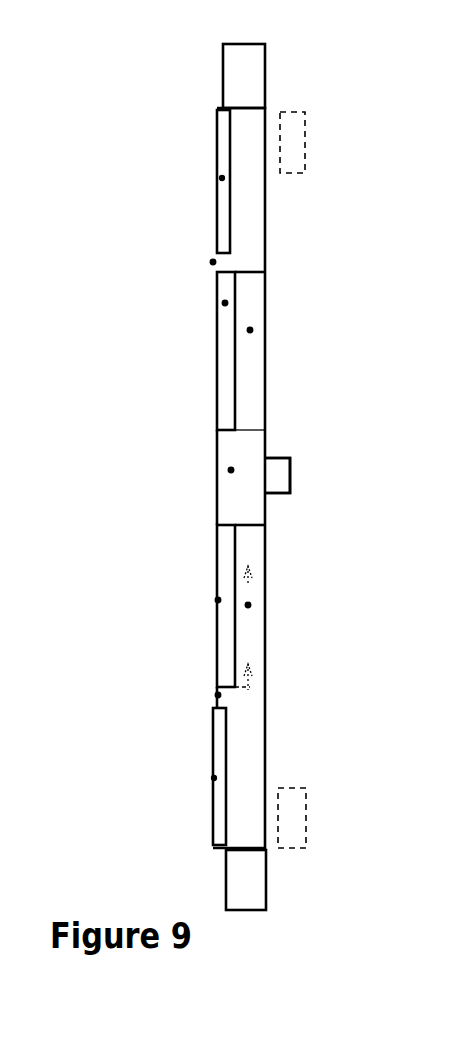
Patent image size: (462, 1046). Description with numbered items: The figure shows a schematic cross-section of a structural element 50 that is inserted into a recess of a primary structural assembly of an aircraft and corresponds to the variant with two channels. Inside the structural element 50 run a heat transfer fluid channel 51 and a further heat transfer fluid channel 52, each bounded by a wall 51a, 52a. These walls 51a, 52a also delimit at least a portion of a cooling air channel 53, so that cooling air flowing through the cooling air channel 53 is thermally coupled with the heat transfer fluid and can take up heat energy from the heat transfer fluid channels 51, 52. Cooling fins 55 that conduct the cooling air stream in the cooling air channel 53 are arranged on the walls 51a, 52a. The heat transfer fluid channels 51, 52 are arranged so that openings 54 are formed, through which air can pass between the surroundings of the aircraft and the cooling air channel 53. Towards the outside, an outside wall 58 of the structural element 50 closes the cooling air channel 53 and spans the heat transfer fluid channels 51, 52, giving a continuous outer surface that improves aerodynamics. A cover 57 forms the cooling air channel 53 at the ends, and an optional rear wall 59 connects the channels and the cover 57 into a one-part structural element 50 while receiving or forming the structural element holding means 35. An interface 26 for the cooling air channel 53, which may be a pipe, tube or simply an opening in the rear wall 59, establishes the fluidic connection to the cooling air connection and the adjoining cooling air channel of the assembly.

The interface 26 is at (290, 458).
The structural element holding means 35 is at (250, 78).
The structural element 50 is at (190, 412).
The heat transfer fluid channel 51 is at (218, 600).
The wall 51a is at (237, 549).
The further heat transfer fluid channel 52 is at (225, 303).
The wall 52a is at (265, 362).
The cooling air channel 53 is at (217, 470).
The openings 54 is at (212, 263).
The cooling fins 55 is at (250, 330).
The cover 57 is at (222, 178).
The outside wall 58 is at (217, 500).
The rear wall 59 is at (265, 240).